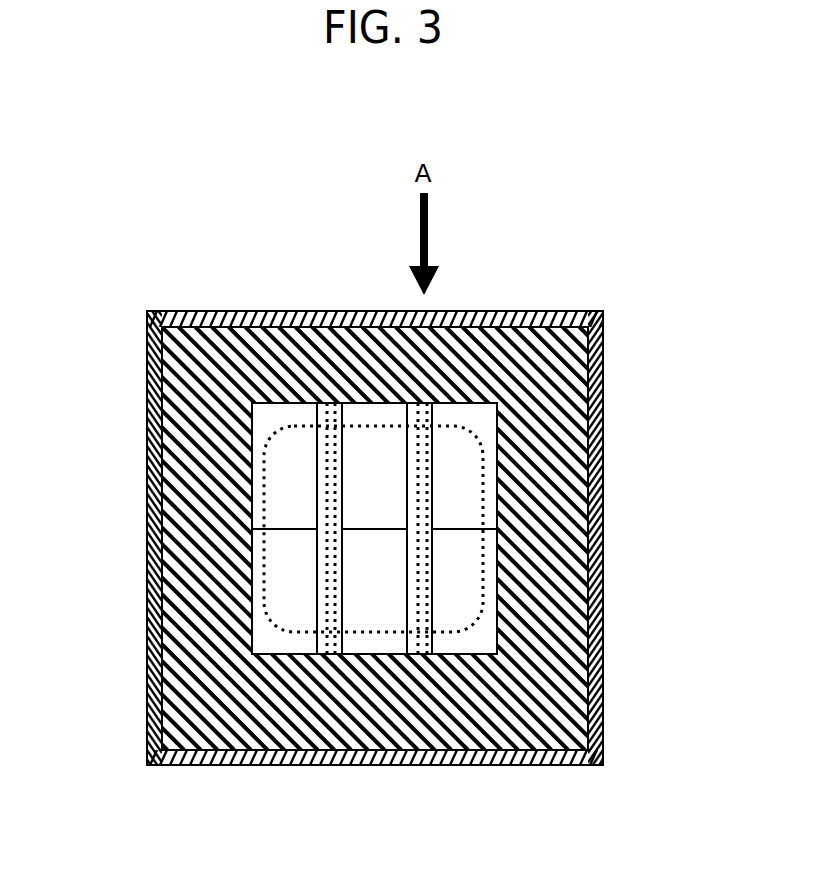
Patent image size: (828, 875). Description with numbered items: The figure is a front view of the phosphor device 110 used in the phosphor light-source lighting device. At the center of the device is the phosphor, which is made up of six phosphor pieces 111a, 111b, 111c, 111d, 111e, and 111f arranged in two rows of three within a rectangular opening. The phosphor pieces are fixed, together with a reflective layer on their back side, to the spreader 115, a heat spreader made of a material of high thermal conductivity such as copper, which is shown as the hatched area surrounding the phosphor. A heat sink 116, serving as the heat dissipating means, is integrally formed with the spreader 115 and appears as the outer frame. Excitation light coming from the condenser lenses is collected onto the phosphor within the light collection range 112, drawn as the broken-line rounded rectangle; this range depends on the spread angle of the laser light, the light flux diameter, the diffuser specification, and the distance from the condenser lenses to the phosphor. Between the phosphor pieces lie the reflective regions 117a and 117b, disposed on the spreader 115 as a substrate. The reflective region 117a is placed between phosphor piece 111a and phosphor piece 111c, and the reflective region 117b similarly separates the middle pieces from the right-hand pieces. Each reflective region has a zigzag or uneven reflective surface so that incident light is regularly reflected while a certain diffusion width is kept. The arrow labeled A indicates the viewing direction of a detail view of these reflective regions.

The phosphor device 110 is at (289, 290).
The light collection range 112 is at (283, 428).
The spreader 115 is at (560, 407).
The heat sink 116 is at (590, 311).
The phosphor piece 111a is at (262, 472).
The phosphor piece 111b is at (262, 592).
The phosphor piece 111c is at (379, 418).
The phosphor piece 111d is at (373, 643).
The phosphor piece 111e is at (475, 418).
The phosphor piece 111f is at (483, 641).
The reflective region 117a is at (330, 643).
The reflective region 117b is at (420, 643).